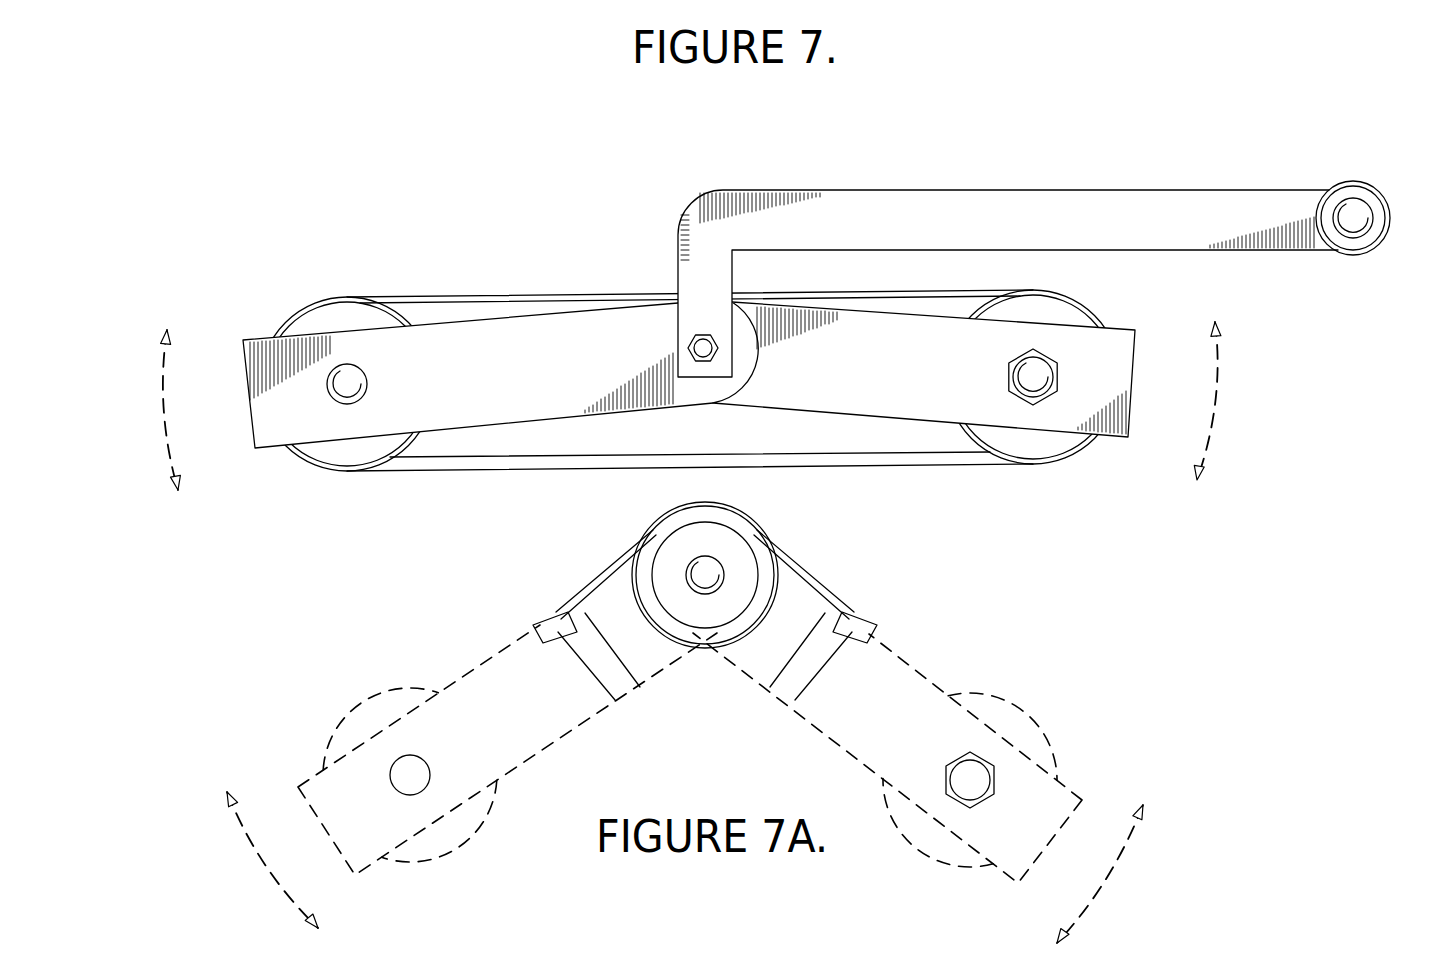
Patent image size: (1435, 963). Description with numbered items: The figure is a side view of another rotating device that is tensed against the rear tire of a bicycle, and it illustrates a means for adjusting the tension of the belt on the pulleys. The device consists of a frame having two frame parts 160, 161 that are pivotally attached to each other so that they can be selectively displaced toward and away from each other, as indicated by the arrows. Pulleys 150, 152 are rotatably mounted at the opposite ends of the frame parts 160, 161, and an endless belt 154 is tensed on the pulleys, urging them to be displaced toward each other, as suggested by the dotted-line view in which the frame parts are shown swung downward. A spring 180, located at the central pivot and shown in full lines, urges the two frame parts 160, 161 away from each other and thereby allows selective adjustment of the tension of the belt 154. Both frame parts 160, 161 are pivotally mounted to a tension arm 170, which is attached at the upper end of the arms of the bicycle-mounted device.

In FIG. 7, the pulley 150 is at (1033, 377).
In FIG. 7, the pulley 152 is at (347, 384).
In FIG. 7, the endless belt 154 is at (547, 460).
In FIG. 7, the frame part 160 is at (478, 375).
In FIG. 7, the frame part 161 is at (924, 369).
In FIG. 7, the tension arm 170 is at (1034, 279).
In FIG. 7A, the spring 180 is at (705, 575).